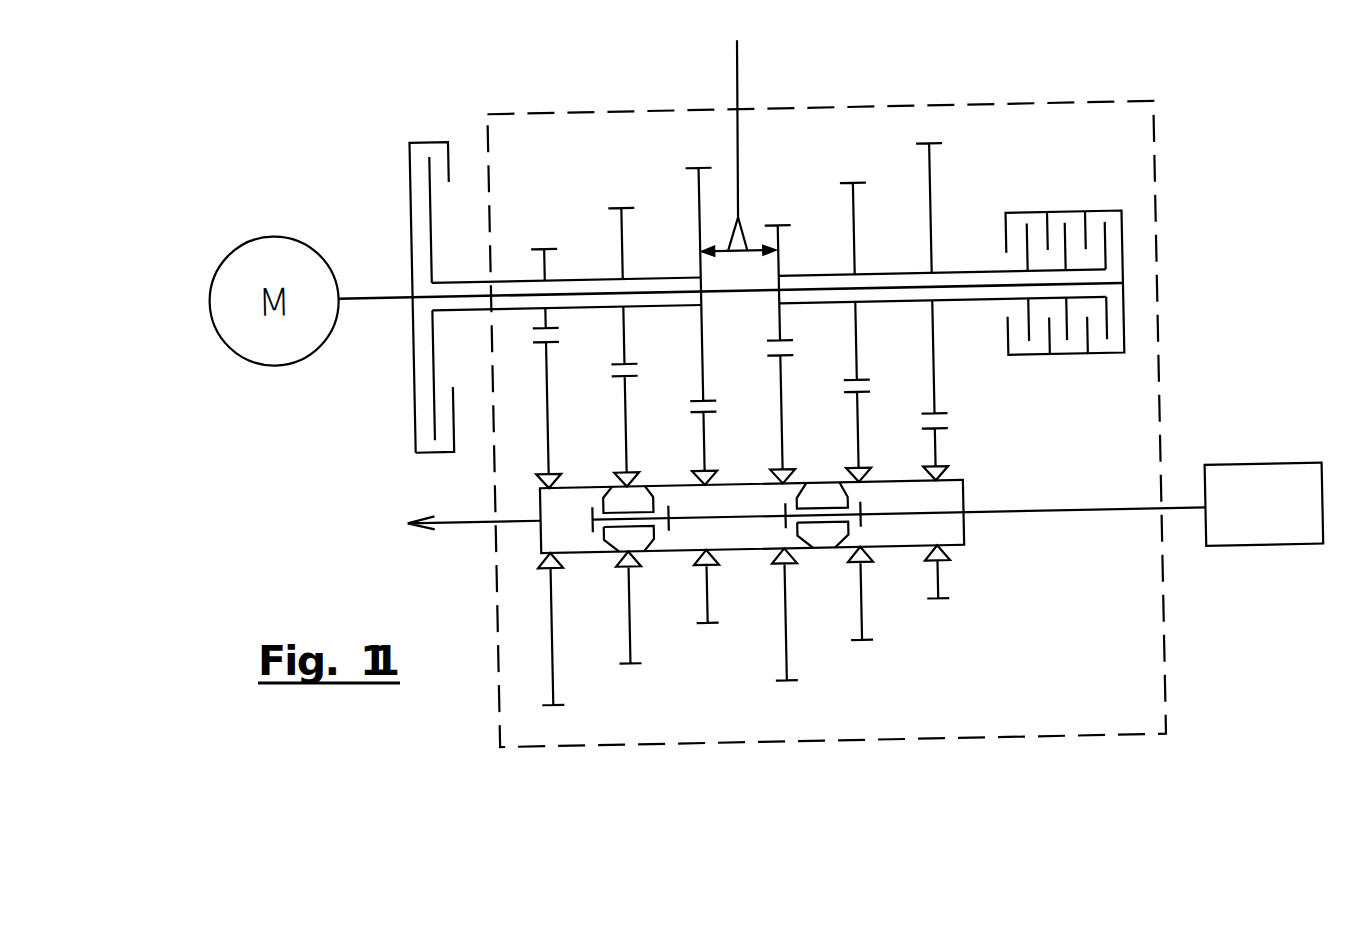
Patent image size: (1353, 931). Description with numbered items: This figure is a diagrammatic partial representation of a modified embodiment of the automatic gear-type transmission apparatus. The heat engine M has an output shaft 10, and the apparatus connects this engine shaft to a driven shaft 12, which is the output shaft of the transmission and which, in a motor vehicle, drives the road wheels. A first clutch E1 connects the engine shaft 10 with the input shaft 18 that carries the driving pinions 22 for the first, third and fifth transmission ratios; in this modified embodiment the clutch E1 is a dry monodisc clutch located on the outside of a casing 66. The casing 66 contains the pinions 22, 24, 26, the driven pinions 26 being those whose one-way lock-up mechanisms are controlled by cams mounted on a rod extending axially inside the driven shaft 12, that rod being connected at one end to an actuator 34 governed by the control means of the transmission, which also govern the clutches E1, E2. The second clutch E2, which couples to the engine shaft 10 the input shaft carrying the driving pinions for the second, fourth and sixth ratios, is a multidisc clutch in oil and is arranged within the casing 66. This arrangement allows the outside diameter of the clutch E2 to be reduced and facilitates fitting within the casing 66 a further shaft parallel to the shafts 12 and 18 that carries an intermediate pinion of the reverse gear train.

The output shaft 10 is at (383, 293).
The input shaft 18 is at (455, 278).
The driving pinions 22 is at (615, 206).
The pinions 24 is at (930, 148).
The driven shaft 12 is at (884, 483).
The driven pinions 26 is at (780, 642).
The actuator 34 is at (1235, 476).
The casing 66 is at (1160, 205).
The clutch E1 is at (441, 135).
The clutch E2 is at (1024, 218).